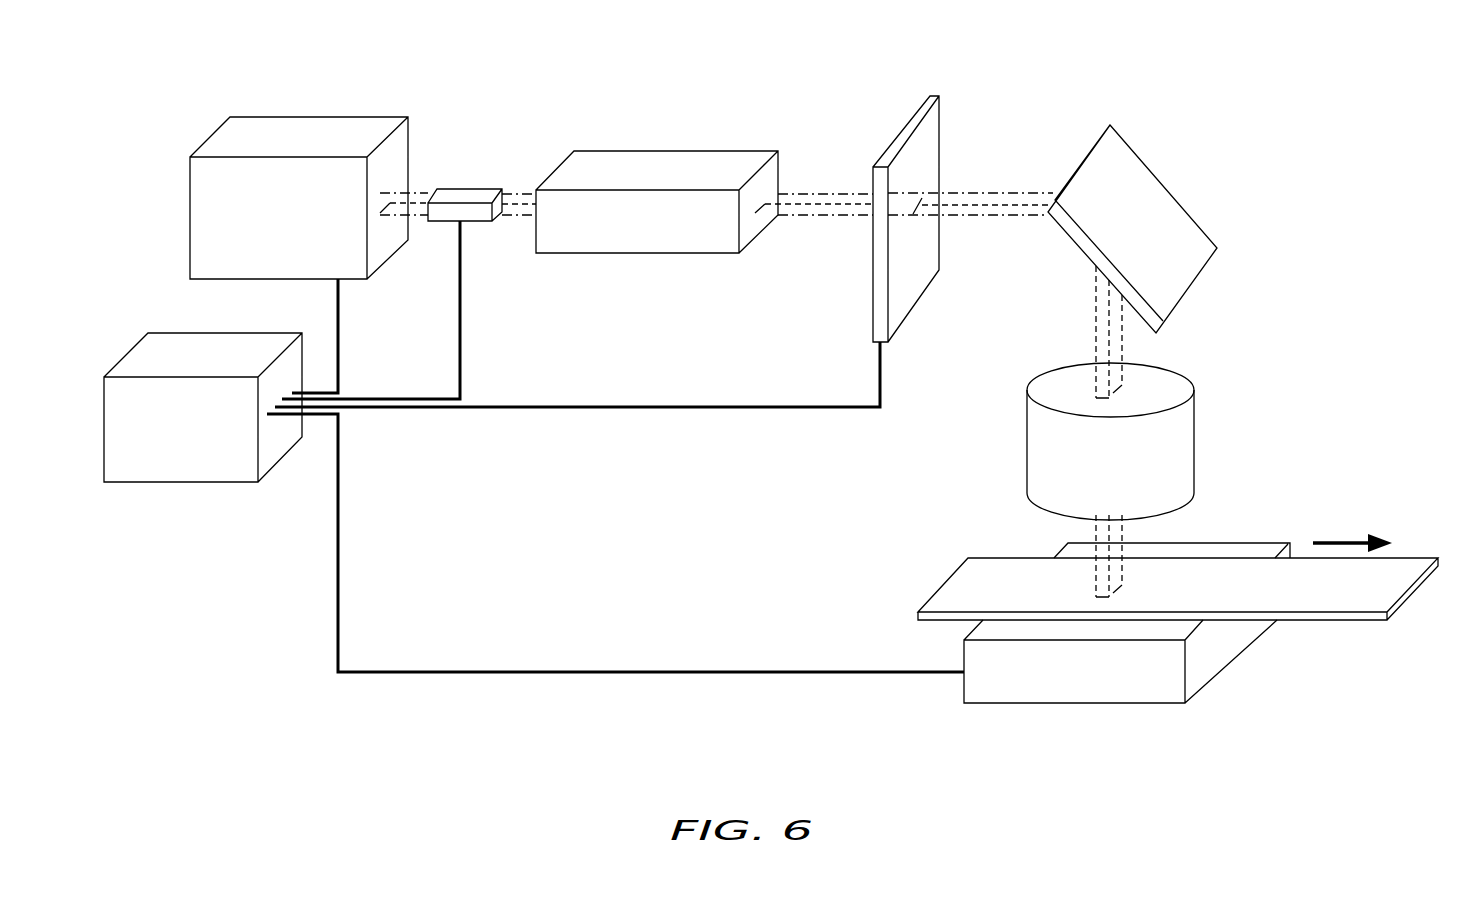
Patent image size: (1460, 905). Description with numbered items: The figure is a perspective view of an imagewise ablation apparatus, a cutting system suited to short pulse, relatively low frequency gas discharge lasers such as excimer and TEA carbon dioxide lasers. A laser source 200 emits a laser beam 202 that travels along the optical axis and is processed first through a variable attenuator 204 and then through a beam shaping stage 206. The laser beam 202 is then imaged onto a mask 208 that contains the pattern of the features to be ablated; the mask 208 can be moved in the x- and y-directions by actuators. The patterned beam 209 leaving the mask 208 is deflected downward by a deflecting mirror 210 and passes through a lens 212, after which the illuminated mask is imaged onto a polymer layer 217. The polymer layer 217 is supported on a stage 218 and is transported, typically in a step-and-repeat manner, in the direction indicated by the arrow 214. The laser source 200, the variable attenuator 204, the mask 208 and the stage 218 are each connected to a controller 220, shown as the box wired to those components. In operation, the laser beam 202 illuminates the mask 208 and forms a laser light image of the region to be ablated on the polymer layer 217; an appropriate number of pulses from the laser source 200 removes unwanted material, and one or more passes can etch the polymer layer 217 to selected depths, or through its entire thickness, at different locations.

The laser source 200 is at (295, 122).
The laser beam 202 is at (418, 195).
The variable attenuator 204 is at (473, 193).
The beam shaping stage 206 is at (674, 165).
The mask 208 is at (918, 112).
The shaped beam 209 is at (980, 193).
The deflecting mirror 210 is at (1165, 197).
The lens 212 is at (1187, 436).
The direction of travel arrow 214 is at (1343, 540).
The polymer layer 217 is at (1343, 620).
The stage 218 is at (1073, 703).
The controller 220 is at (192, 467).